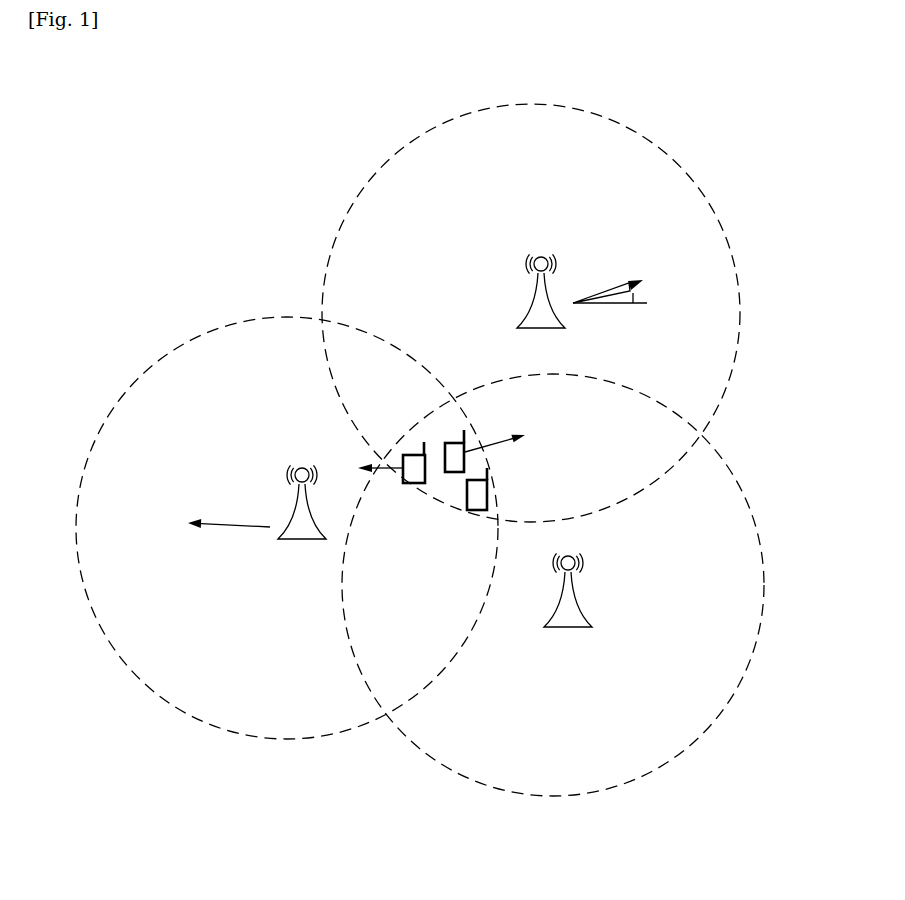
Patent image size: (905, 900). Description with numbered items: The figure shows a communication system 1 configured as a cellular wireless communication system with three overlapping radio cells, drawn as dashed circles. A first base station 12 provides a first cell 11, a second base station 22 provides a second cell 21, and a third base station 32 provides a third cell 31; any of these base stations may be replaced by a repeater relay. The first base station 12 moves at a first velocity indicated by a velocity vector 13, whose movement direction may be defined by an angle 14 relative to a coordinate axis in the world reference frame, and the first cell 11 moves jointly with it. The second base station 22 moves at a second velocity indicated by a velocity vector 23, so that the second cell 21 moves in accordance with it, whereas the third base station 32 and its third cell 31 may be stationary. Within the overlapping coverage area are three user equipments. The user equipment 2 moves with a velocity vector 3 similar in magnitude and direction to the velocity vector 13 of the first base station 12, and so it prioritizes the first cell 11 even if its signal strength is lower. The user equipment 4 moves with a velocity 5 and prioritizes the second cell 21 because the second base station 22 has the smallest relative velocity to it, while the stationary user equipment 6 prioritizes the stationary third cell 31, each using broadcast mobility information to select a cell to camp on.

The communication system 1 is at (76, 140).
The first cell 11 is at (677, 161).
The first base station 12 is at (530, 303).
The velocity vector 13 is at (603, 293).
The angle 14 is at (633, 297).
The second cell 21 is at (153, 371).
The second base station 22 is at (277, 538).
The velocity vector 23 is at (232, 522).
The third cell 31 is at (735, 473).
The third base station 32 is at (545, 627).
The user equipment 2 is at (456, 444).
The velocity vector 3 is at (494, 445).
The user equipment 4 is at (413, 485).
The velocity 5 is at (378, 470).
The user equipment 6 is at (489, 494).